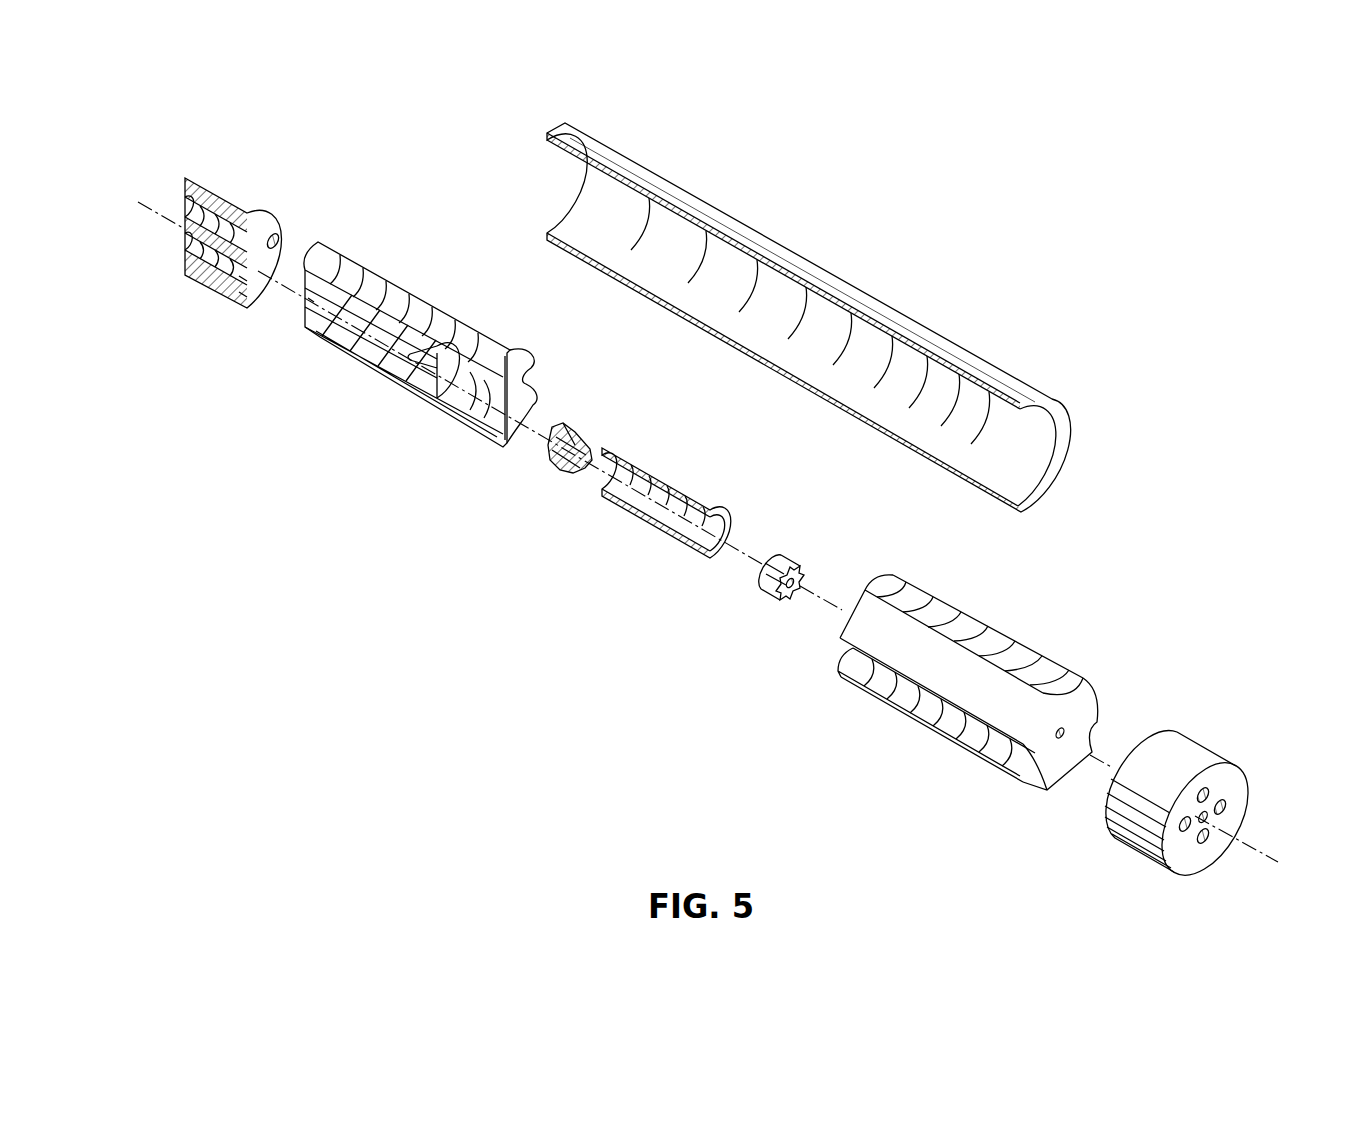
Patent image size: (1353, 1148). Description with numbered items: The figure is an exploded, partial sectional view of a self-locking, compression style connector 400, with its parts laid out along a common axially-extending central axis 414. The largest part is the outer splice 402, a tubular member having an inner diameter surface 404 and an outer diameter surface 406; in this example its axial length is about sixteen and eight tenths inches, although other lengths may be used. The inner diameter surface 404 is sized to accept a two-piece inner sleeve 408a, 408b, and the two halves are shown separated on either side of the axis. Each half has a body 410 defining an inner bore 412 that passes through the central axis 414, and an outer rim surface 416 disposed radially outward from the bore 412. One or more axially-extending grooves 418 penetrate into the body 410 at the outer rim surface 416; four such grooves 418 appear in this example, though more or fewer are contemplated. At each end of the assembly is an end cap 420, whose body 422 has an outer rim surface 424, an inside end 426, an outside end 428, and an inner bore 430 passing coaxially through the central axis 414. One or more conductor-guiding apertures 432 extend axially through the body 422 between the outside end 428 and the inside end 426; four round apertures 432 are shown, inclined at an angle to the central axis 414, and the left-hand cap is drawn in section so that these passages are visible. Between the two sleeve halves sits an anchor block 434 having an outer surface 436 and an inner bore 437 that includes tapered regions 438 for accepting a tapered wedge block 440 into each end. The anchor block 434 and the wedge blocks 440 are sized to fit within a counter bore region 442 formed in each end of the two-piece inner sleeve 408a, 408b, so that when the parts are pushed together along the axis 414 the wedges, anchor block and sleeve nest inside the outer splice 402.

The self-locking connector 400 is at (705, 486).
The outer splice 402 is at (856, 317).
The inner diameter surface 404 is at (1050, 455).
The outer diameter surface 406 is at (738, 212).
The inner sleeve 408a is at (420, 345).
The inner sleeve 408b is at (958, 666).
The body 410 is at (1082, 692).
The inner bore 412 is at (312, 300).
The central axis 414 is at (158, 215).
The outer rim surface 416 is at (857, 623).
The axially-extending grooves 418 is at (918, 605).
The end cap 420 is at (696, 486).
The body 422 is at (1177, 776).
The outer rim surface 424 is at (267, 207).
The inside end 426 is at (1140, 735).
The outside end 428 is at (1182, 850).
The inner bore 430 is at (188, 235).
The conductor-guiding apertures 432 is at (247, 305).
The anchor block 434 is at (622, 523).
The outer surface 436 is at (648, 496).
The inner bore 437 is at (647, 497).
The tapered regions 438 is at (707, 533).
The tapered wedge block 440 is at (505, 508).
The counter bore region 442 is at (480, 405).